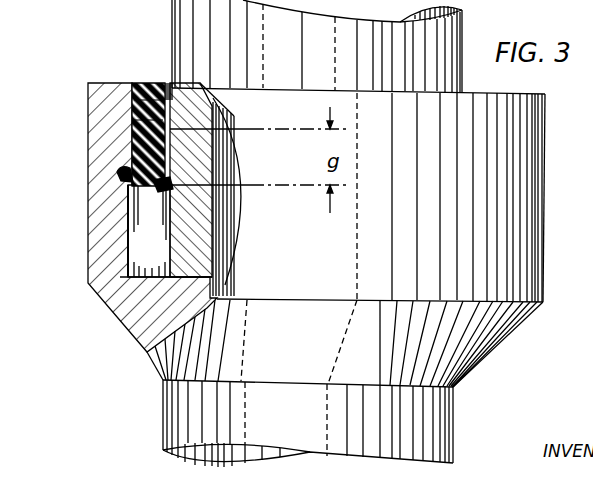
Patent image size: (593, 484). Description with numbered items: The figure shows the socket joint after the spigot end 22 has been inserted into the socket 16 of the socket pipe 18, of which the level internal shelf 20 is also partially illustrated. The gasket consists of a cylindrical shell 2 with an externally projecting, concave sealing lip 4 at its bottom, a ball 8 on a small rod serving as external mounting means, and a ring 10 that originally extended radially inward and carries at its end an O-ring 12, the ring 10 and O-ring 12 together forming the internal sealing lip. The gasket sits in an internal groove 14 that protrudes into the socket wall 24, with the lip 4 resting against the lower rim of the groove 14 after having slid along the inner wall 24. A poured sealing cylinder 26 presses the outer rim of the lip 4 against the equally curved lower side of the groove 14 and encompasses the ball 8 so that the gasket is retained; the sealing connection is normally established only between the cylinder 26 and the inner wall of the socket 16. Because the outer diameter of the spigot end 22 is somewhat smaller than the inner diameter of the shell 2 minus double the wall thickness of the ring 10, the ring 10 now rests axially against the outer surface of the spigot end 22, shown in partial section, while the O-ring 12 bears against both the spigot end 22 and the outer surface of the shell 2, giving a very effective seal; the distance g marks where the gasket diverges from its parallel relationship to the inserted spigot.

The cylindrical shell 2 is at (172, 97).
The sealing lip 4 is at (150, 231).
The ball 8 is at (138, 115).
The ring 10 is at (172, 166).
The O-ring 12 is at (168, 184).
The internal groove 14 is at (120, 169).
The socket 16 is at (90, 212).
The socket pipe 18 is at (183, 410).
The internal shelf 20 is at (218, 284).
The spigot end 22 is at (192, 10).
The socket wall 24 is at (128, 250).
The sealing cylinder 26 is at (140, 83).